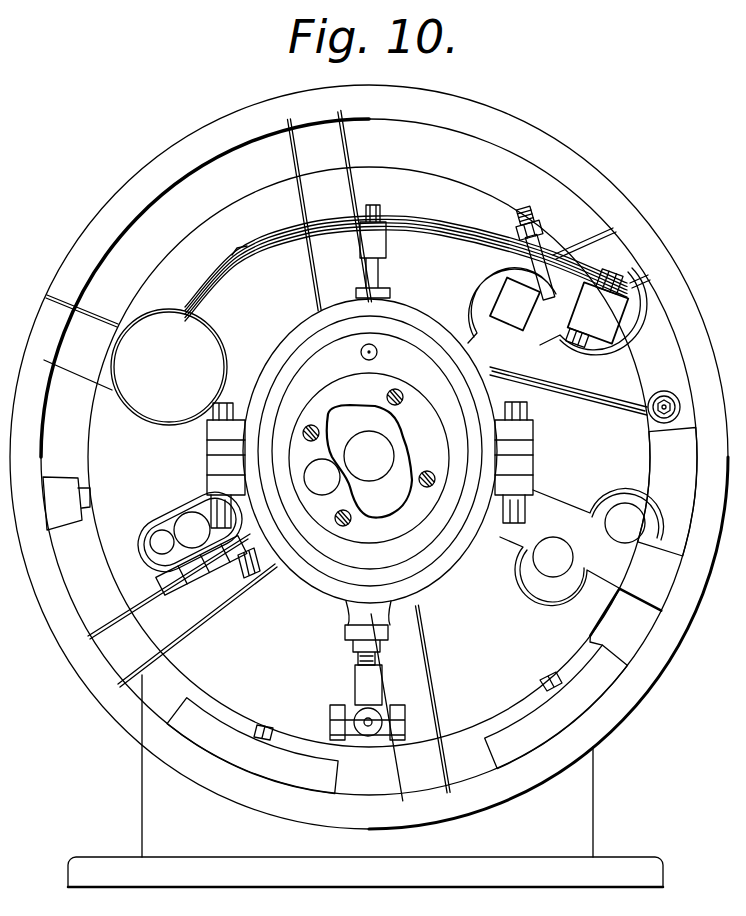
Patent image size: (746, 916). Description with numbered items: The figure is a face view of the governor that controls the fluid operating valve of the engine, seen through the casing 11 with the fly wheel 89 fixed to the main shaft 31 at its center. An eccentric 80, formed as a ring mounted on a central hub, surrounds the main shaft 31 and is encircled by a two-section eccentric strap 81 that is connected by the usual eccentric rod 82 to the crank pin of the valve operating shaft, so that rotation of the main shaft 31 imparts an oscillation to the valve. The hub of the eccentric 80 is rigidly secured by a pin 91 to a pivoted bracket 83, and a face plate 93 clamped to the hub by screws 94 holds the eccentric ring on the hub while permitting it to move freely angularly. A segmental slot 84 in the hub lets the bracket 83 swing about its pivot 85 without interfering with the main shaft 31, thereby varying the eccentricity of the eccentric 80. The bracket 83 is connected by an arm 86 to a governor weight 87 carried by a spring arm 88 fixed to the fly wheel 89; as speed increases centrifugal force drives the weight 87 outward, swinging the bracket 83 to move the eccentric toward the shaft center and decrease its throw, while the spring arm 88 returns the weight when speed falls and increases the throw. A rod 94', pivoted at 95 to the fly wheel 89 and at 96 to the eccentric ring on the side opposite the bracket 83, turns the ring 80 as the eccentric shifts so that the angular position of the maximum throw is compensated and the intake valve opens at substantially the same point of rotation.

The casing 11 is at (298, 343).
The main shaft 31 is at (369, 456).
The eccentric 80 is at (408, 360).
The eccentric strap 81 is at (457, 555).
The eccentric rod 82 is at (365, 688).
The pivoted bracket 83 is at (183, 550).
The segmental slot 84 is at (372, 518).
The pivot 85 is at (237, 572).
The arm 86 is at (175, 457).
The governor weight 87 is at (169, 367).
The spring arm 88 is at (272, 242).
The fly wheel 89 is at (615, 206).
The pin 91 is at (322, 477).
The face plate 93 is at (400, 517).
The screws 94 is at (371, 457).
The rod 94' is at (568, 398).
The pivot 95 is at (664, 391).
The pivot 96 is at (349, 353).